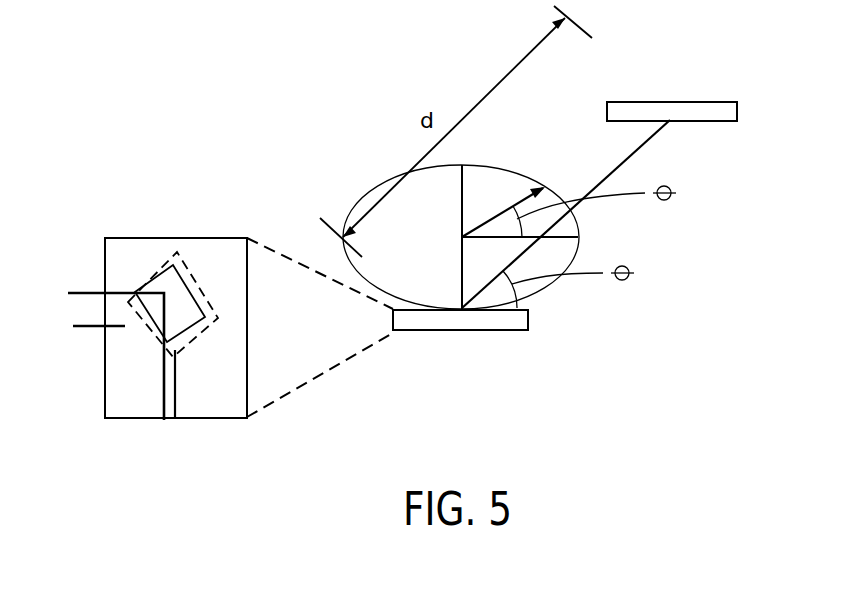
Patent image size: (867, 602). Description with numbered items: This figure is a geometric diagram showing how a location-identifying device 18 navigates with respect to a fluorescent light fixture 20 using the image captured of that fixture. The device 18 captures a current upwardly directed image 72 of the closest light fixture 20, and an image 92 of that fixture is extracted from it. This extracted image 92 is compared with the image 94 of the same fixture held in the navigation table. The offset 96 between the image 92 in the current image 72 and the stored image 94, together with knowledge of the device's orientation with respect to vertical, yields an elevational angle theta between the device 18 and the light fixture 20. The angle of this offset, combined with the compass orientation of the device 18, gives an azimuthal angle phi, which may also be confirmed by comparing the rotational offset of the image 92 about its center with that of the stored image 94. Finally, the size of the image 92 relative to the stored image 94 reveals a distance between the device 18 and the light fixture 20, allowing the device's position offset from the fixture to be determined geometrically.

The location-identifying device 18 is at (462, 332).
The fluorescent light fixture 20 is at (738, 110).
The upwardly directed image 72 is at (105, 375).
The image of the closest light fixture 92 is at (150, 270).
The stored image of the light fixture 94 is at (200, 280).
The offset 96 is at (88, 312).